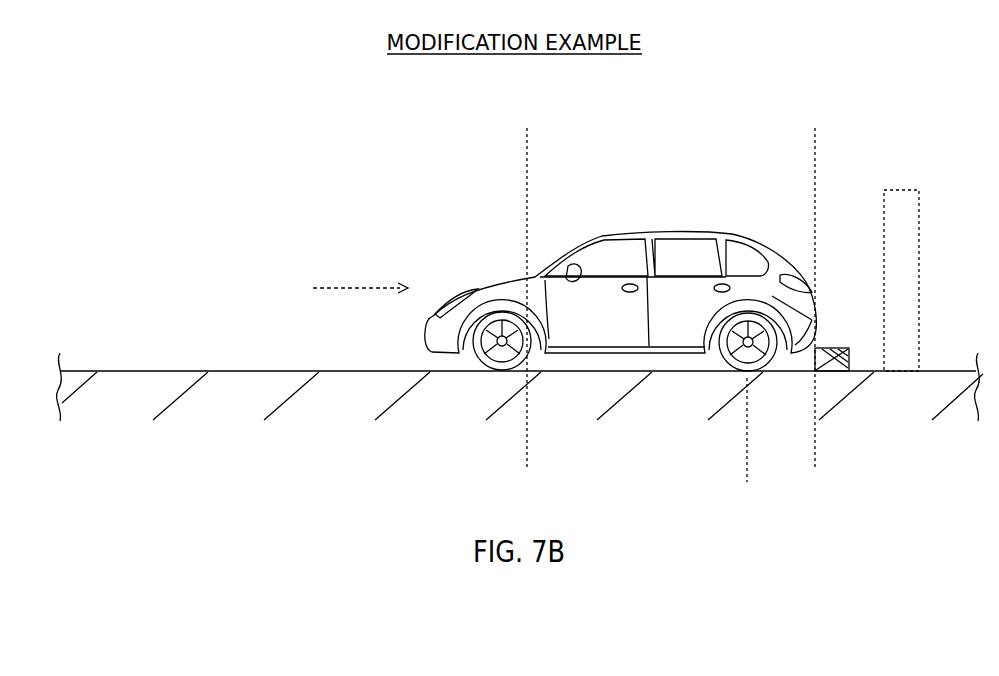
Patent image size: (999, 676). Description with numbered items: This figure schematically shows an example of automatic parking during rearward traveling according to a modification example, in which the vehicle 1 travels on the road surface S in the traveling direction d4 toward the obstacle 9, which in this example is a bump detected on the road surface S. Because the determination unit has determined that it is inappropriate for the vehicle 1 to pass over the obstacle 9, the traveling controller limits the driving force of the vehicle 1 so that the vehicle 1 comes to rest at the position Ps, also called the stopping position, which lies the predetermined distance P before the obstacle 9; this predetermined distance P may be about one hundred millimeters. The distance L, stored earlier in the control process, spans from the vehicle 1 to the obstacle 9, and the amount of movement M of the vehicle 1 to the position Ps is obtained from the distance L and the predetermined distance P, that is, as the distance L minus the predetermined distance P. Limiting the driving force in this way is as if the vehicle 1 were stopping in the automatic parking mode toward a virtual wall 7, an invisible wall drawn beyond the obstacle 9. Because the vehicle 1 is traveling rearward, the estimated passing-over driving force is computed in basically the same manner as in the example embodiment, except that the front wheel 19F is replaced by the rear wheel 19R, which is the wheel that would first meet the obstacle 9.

The vehicle 1 is at (503, 253).
The virtual wall 7 is at (900, 187).
The obstacle 9 is at (832, 347).
The front wheel 19F is at (483, 374).
The rear wheel 19R is at (758, 375).
The road surface S is at (948, 368).
The traveling direction d4 is at (358, 279).
The distance L is at (815, 159).
The amount of movement M is at (737, 450).
The predetermined distance P is at (815, 453).
The position Ps is at (746, 443).